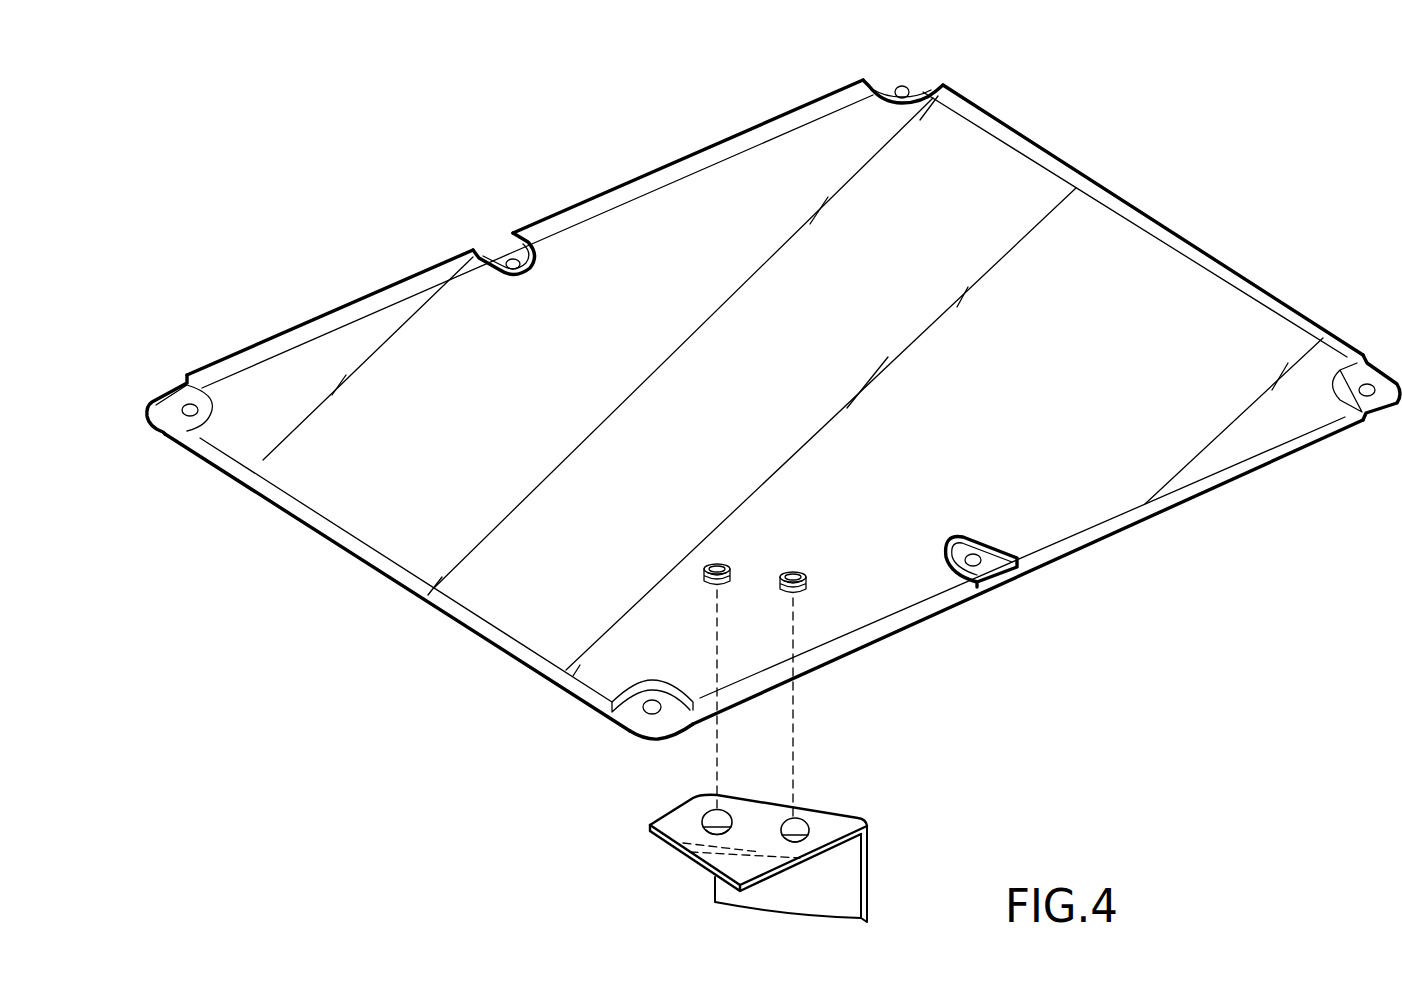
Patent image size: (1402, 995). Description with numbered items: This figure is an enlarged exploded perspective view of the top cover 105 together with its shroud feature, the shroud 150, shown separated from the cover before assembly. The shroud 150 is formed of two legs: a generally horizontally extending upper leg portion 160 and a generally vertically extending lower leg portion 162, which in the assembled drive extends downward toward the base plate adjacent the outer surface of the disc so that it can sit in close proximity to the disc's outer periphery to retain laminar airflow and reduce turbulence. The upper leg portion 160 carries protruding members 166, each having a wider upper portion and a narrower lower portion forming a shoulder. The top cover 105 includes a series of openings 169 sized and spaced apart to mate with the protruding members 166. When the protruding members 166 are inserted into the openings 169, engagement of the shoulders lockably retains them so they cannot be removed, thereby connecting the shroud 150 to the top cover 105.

The top cover 105 is at (1258, 257).
The shroud 150 is at (878, 845).
The upper leg portion 160 is at (667, 826).
The lower leg portion 162 is at (843, 892).
The protruding members 166 is at (728, 810).
The openings 169 is at (718, 562).